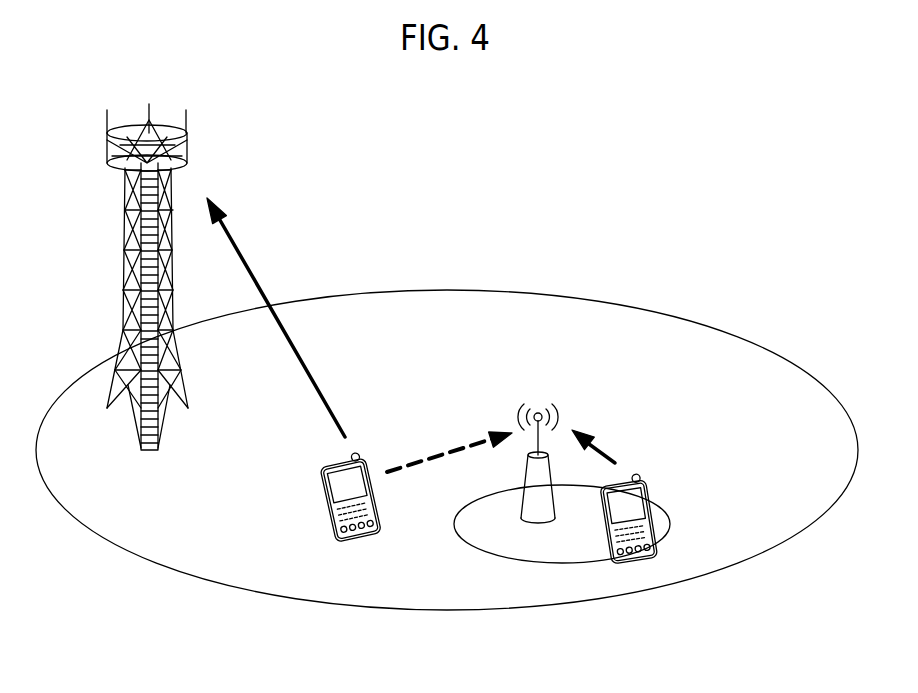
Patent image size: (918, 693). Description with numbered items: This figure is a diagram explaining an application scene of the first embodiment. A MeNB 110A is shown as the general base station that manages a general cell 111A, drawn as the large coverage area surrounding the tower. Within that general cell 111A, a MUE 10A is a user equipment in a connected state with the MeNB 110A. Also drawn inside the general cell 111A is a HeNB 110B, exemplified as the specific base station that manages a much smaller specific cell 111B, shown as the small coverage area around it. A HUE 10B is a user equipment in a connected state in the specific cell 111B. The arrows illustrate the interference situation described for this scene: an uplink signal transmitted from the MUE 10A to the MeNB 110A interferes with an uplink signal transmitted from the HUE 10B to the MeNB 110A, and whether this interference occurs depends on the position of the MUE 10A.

The MeNB 110A is at (189, 151).
The general cell 111A is at (683, 312).
The MUE 10A is at (345, 545).
The HeNB 110B is at (523, 520).
The specific cell 111B is at (537, 563).
The HUE 10B is at (640, 563).